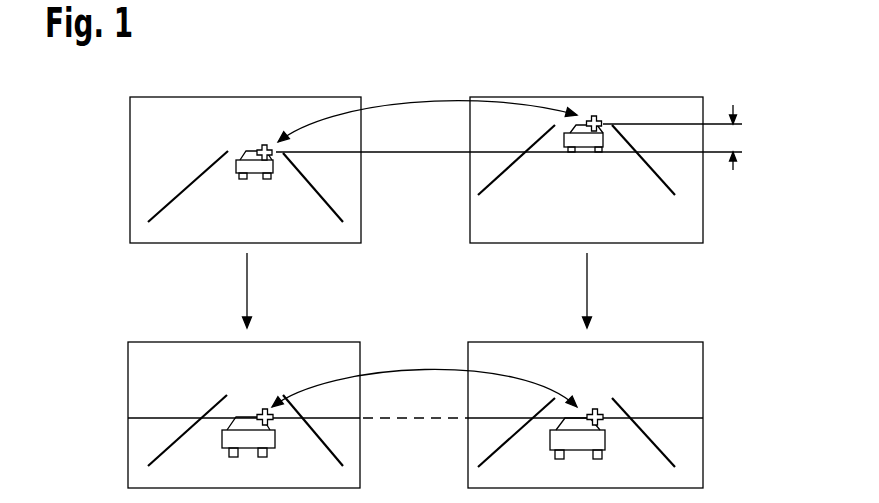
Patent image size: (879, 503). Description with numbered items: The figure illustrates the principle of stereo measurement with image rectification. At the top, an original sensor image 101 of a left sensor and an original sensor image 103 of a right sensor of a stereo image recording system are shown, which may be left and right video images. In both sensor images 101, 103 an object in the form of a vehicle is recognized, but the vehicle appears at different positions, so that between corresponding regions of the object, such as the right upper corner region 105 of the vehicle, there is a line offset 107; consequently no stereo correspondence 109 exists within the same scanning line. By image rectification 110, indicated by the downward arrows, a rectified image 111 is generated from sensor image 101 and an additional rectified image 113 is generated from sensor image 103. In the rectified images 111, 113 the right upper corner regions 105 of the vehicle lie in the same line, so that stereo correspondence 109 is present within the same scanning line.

The original sensor image of left sensor 101 is at (130, 137).
The original sensor image of right sensor 103 is at (703, 218).
The right upper corner region of the vehicle 105 is at (265, 145).
The line offset 107 is at (735, 137).
The stereo correspondence 109 is at (405, 102).
The image rectification 110 is at (245, 287).
The rectified image 111 is at (128, 388).
The additional rectified image 113 is at (703, 390).